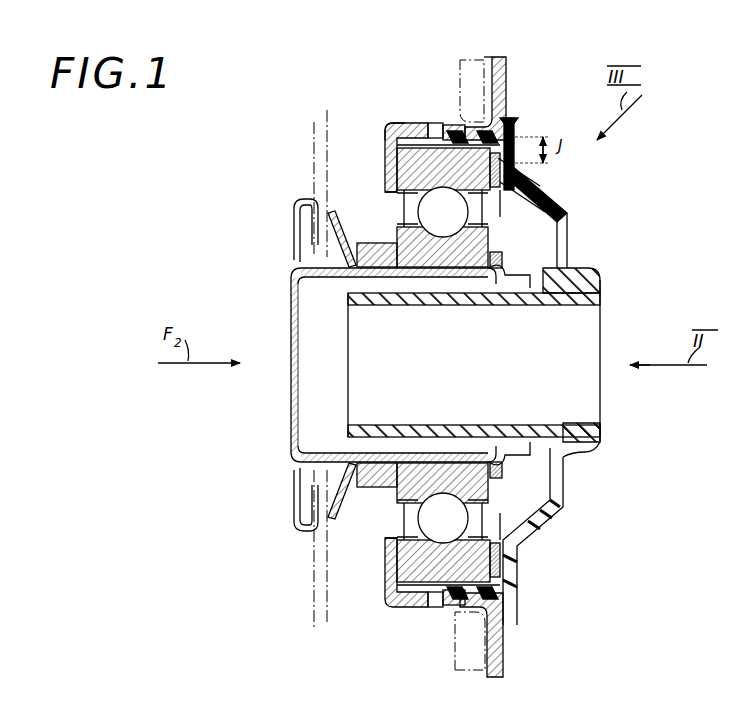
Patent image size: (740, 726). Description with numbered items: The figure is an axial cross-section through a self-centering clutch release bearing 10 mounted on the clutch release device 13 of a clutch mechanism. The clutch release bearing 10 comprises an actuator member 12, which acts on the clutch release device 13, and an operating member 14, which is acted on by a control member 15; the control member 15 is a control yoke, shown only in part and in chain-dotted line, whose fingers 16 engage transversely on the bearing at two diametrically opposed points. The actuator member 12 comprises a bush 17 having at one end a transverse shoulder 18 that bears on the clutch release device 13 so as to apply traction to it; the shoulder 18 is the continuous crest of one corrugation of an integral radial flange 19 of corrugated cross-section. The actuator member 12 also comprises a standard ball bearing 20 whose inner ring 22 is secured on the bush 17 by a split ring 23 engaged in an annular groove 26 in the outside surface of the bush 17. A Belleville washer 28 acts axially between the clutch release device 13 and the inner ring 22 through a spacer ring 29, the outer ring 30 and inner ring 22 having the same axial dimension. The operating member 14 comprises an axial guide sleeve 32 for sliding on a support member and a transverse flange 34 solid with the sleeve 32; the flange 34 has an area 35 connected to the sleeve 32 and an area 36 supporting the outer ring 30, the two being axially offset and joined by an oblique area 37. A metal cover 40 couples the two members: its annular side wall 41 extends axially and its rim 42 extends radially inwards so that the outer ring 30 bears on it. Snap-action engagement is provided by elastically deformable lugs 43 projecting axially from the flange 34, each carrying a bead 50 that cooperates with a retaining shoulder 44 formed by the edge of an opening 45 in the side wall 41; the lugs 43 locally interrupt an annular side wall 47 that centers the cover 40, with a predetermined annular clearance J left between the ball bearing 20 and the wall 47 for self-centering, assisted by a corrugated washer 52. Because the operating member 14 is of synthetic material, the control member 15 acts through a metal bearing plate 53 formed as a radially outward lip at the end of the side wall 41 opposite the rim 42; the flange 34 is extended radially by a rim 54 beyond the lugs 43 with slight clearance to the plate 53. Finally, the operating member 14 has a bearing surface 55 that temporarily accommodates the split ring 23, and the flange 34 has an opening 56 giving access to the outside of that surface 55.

The clutch release bearing 10 is at (382, 123).
The actuator member 12 is at (287, 340).
The clutch release device 13 is at (310, 150).
The operating member 14 is at (600, 373).
The control member 15 is at (488, 56).
The fingers 16 is at (477, 55).
The bush 17 is at (287, 378).
The transverse shoulder 18 is at (317, 203).
The radial flange 19 is at (292, 257).
The ball bearing 20 is at (392, 158).
The inner ring 22 is at (437, 252).
The split ring 23 is at (498, 262).
The annular groove 26 is at (498, 458).
The Belleville washer 28 is at (330, 223).
The spacer ring 29 is at (367, 248).
The outer ring 30 is at (407, 177).
The axial guide sleeve 32 is at (590, 452).
The transverse flange 34 is at (550, 200).
The area 35 is at (567, 252).
The area 36 is at (517, 168).
The oblique area 37 is at (527, 190).
The cover 40 is at (417, 121).
The annular side wall 41 is at (402, 122).
The rim 42 is at (392, 174).
The elastically deformable lug 43 is at (477, 365).
The retaining shoulder 44 is at (437, 130).
The openings 45 is at (434, 122).
The annular side wall 47 is at (445, 365).
The bead 50 is at (443, 600).
The corrugated washer 52 is at (518, 140).
The bearing plate 53 is at (508, 62).
The rim 54 is at (510, 128).
The bearing surface 55 is at (547, 463).
The opening 56 is at (550, 211).